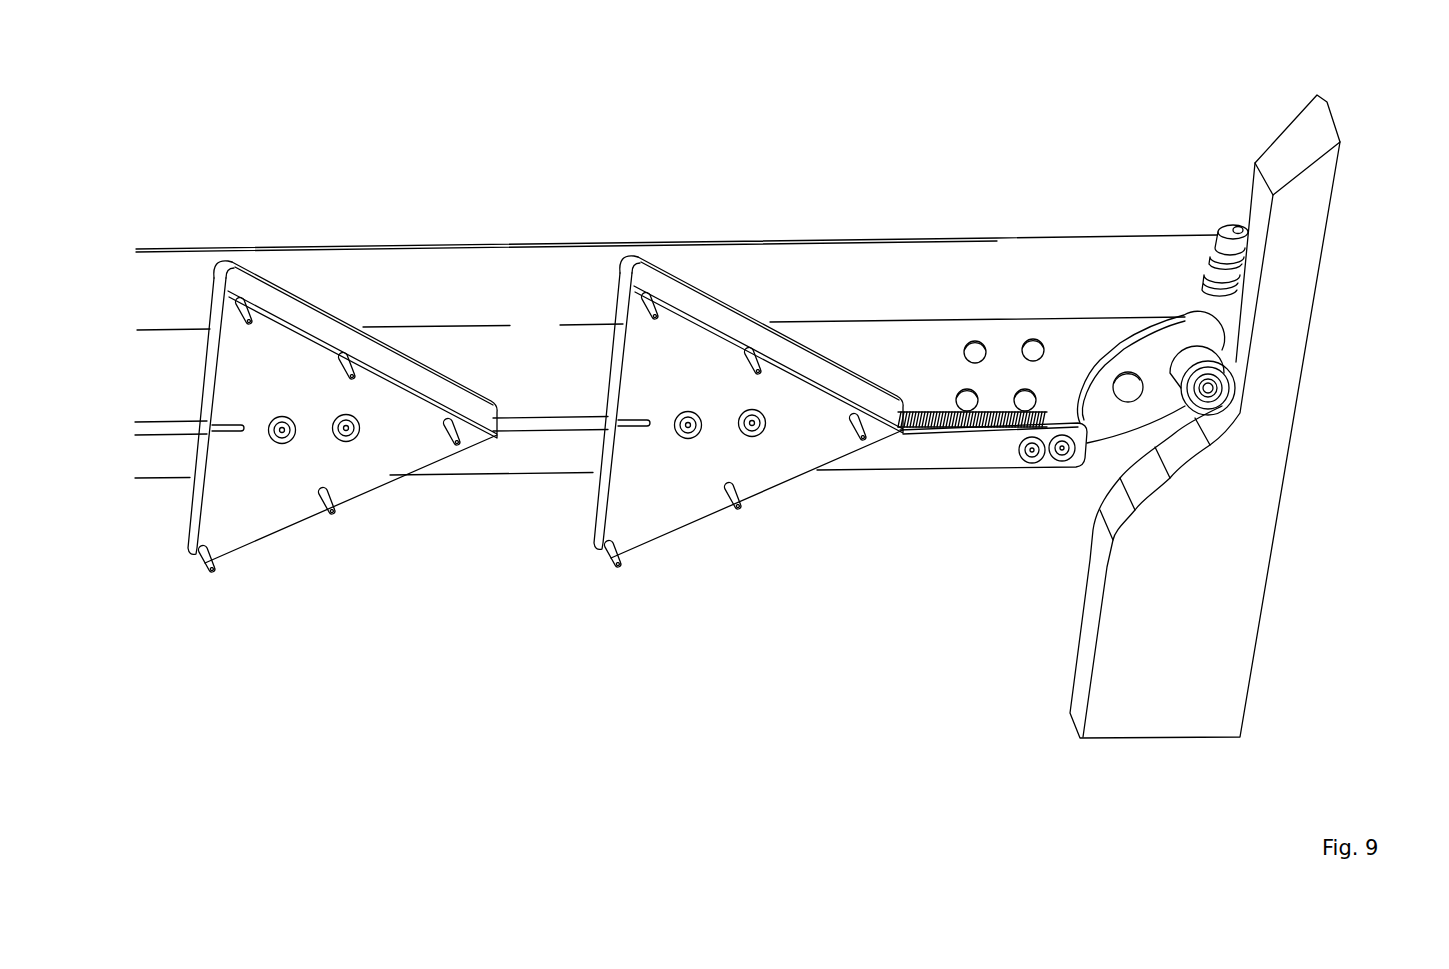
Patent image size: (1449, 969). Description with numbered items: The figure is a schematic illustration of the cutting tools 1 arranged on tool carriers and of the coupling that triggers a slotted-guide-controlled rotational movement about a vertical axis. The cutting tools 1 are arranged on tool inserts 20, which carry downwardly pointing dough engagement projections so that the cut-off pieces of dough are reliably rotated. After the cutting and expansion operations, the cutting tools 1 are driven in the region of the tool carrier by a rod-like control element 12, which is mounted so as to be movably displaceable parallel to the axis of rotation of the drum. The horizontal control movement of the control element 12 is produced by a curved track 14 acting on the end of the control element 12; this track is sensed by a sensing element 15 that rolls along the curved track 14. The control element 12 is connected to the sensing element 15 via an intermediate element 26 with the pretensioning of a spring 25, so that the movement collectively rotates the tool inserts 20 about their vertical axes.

The cutting tool 1 is at (286, 311).
The tool insert 20 is at (315, 383).
The control element 12 is at (935, 458).
The spring 25 is at (935, 412).
The intermediate element 26 is at (1143, 347).
The sensing element 15 is at (1212, 386).
The curved track 14 is at (1135, 480).